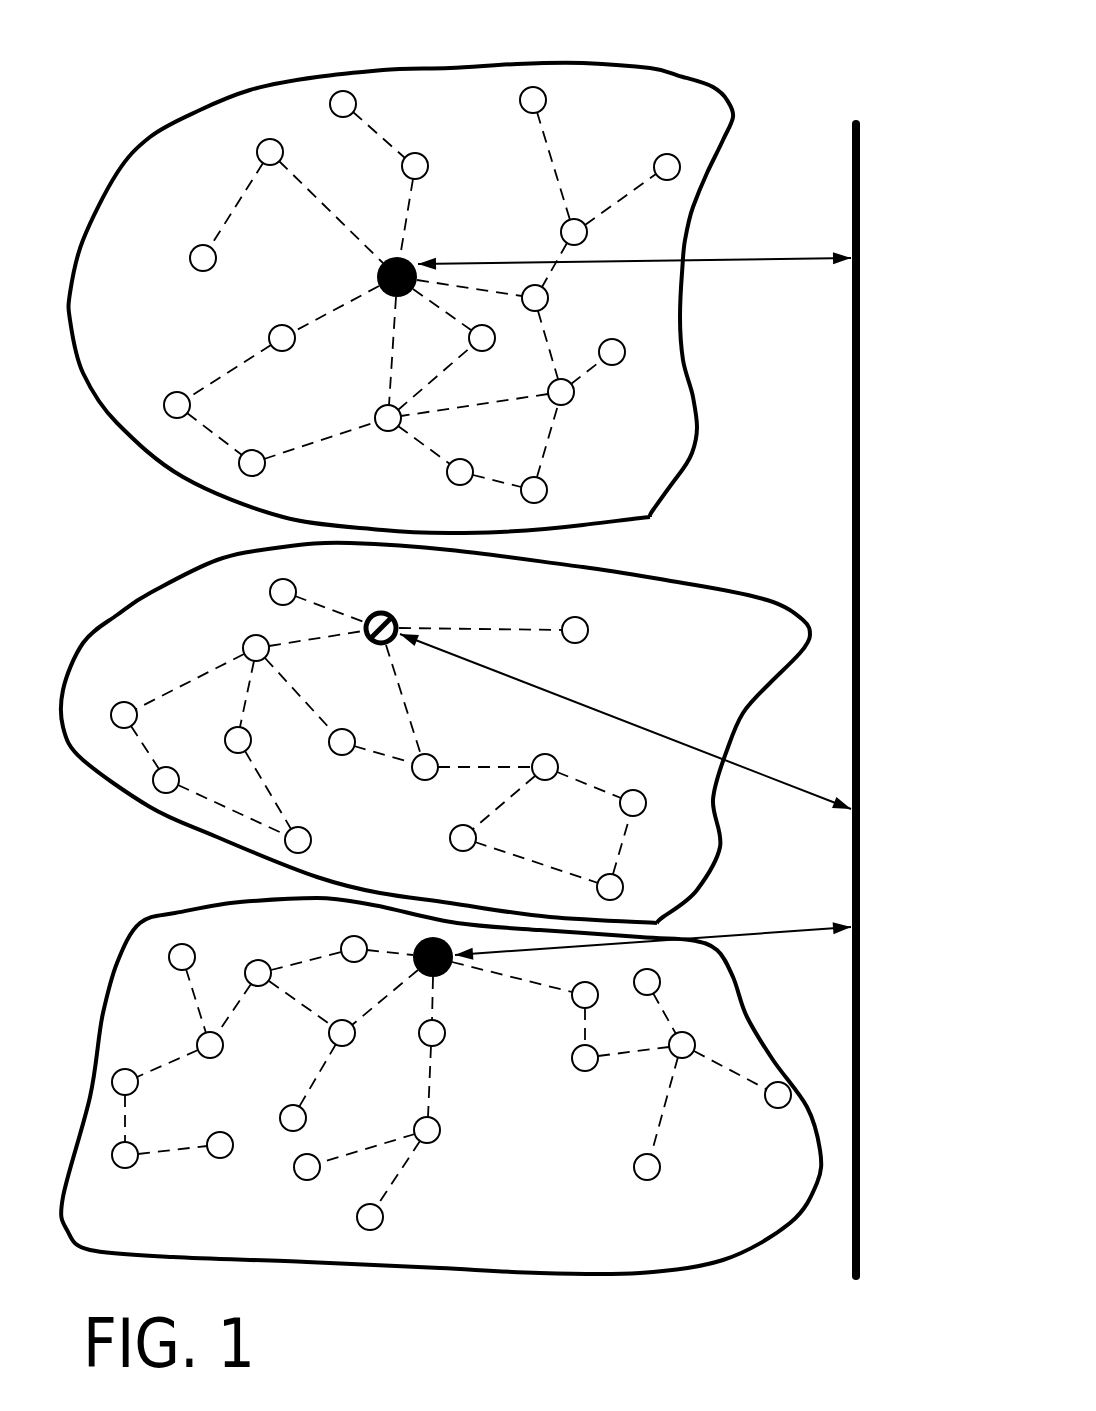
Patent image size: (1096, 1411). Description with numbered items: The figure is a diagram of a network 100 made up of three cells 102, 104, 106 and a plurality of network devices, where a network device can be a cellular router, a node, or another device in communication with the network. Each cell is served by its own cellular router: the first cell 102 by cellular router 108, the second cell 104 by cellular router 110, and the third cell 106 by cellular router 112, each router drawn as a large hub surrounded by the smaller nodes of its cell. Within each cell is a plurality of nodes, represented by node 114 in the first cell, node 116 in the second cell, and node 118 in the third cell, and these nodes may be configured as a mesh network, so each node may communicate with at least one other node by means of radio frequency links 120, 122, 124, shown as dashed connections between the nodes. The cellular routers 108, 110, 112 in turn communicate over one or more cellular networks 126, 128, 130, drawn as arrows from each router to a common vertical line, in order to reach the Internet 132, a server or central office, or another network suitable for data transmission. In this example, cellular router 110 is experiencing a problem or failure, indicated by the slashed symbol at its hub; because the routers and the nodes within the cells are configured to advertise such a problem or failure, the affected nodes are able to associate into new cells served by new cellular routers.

The network 100 is at (842, 645).
The cell 102 is at (217, 112).
The cell 104 is at (205, 560).
The cell 106 is at (175, 913).
The cellular router 108 is at (375, 275).
The cellular router 110 is at (394, 616).
The cellular router 112 is at (417, 944).
The node 114 is at (272, 333).
The node 116 is at (586, 637).
The node 118 is at (585, 1071).
The radio frequency (RF) link 120 is at (355, 430).
The radio frequency (RF) link 122 is at (267, 787).
The radio frequency (RF) link 124 is at (170, 1152).
The cellular network 126 is at (708, 256).
The cellular network 128 is at (737, 764).
The cellular network 130 is at (732, 933).
The Internet 132 is at (852, 515).